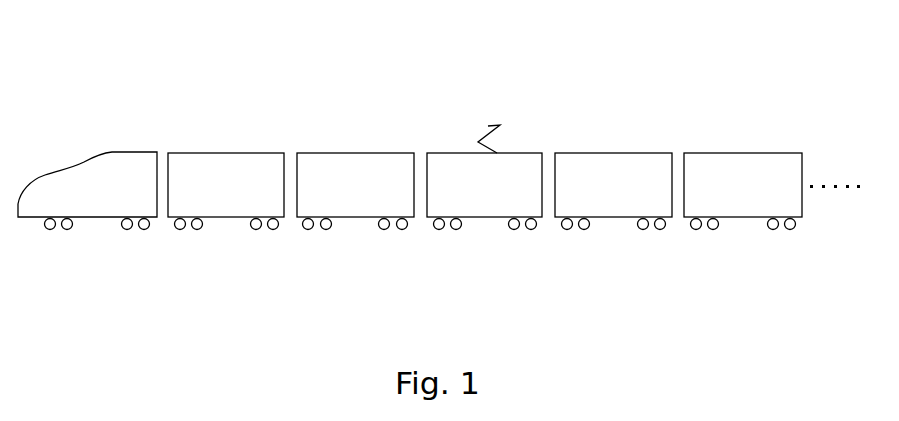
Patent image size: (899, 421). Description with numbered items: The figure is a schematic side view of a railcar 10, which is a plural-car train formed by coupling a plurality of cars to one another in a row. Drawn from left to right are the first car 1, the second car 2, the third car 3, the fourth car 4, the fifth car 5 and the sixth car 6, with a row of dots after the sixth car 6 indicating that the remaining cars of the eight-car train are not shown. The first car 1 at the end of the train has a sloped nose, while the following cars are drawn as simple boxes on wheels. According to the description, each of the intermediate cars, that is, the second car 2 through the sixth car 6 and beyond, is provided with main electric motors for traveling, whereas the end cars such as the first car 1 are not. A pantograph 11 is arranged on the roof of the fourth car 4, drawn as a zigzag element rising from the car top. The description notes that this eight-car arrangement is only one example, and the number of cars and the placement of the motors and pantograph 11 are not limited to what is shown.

The railcar 10 is at (160, 101).
The pantograph / current collector 11 is at (488, 126).
The first car 1 is at (98, 217).
The second car 2 is at (225, 217).
The third car 3 is at (355, 217).
The fourth car 4 is at (485, 217).
The fifth car 5 is at (613, 217).
The sixth car 6 is at (741, 217).